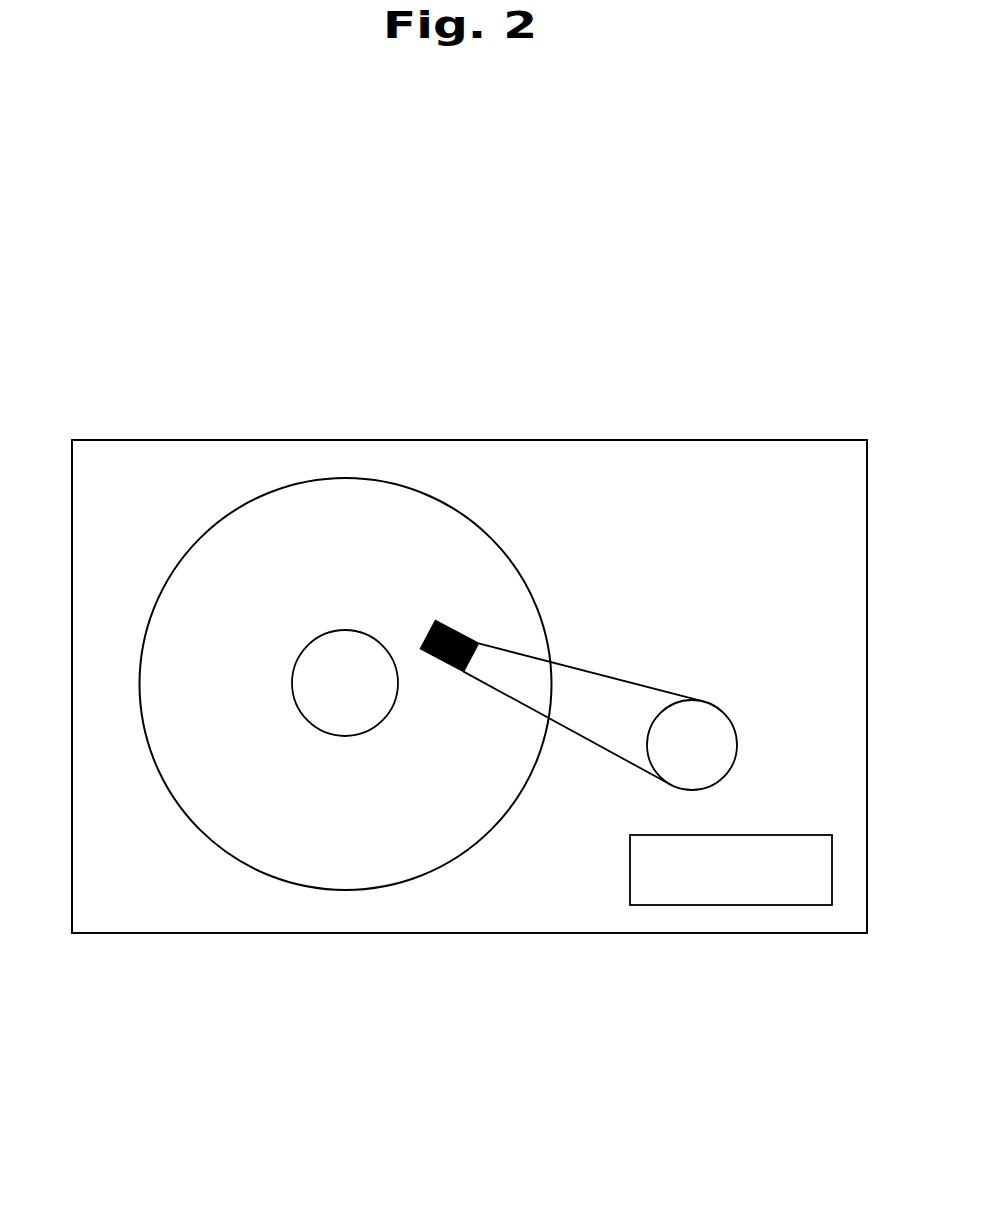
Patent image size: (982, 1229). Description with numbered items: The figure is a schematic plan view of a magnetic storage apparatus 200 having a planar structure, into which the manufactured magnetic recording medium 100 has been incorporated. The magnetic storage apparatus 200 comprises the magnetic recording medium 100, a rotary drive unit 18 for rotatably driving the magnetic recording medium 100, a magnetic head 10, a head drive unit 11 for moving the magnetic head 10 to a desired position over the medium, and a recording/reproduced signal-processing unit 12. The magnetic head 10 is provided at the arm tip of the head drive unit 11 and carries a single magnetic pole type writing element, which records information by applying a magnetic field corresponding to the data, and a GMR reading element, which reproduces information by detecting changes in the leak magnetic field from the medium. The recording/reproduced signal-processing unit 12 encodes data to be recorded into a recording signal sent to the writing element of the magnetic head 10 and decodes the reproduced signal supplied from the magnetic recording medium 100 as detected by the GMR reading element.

The magnetic storage apparatus 200 is at (506, 362).
The magnetic recording medium 100 is at (318, 835).
The rotary drive unit 18 is at (340, 653).
The magnetic head 10 is at (462, 630).
The head drive unit 11 is at (703, 718).
The recording/reproduced signal-processing unit 12 is at (700, 878).